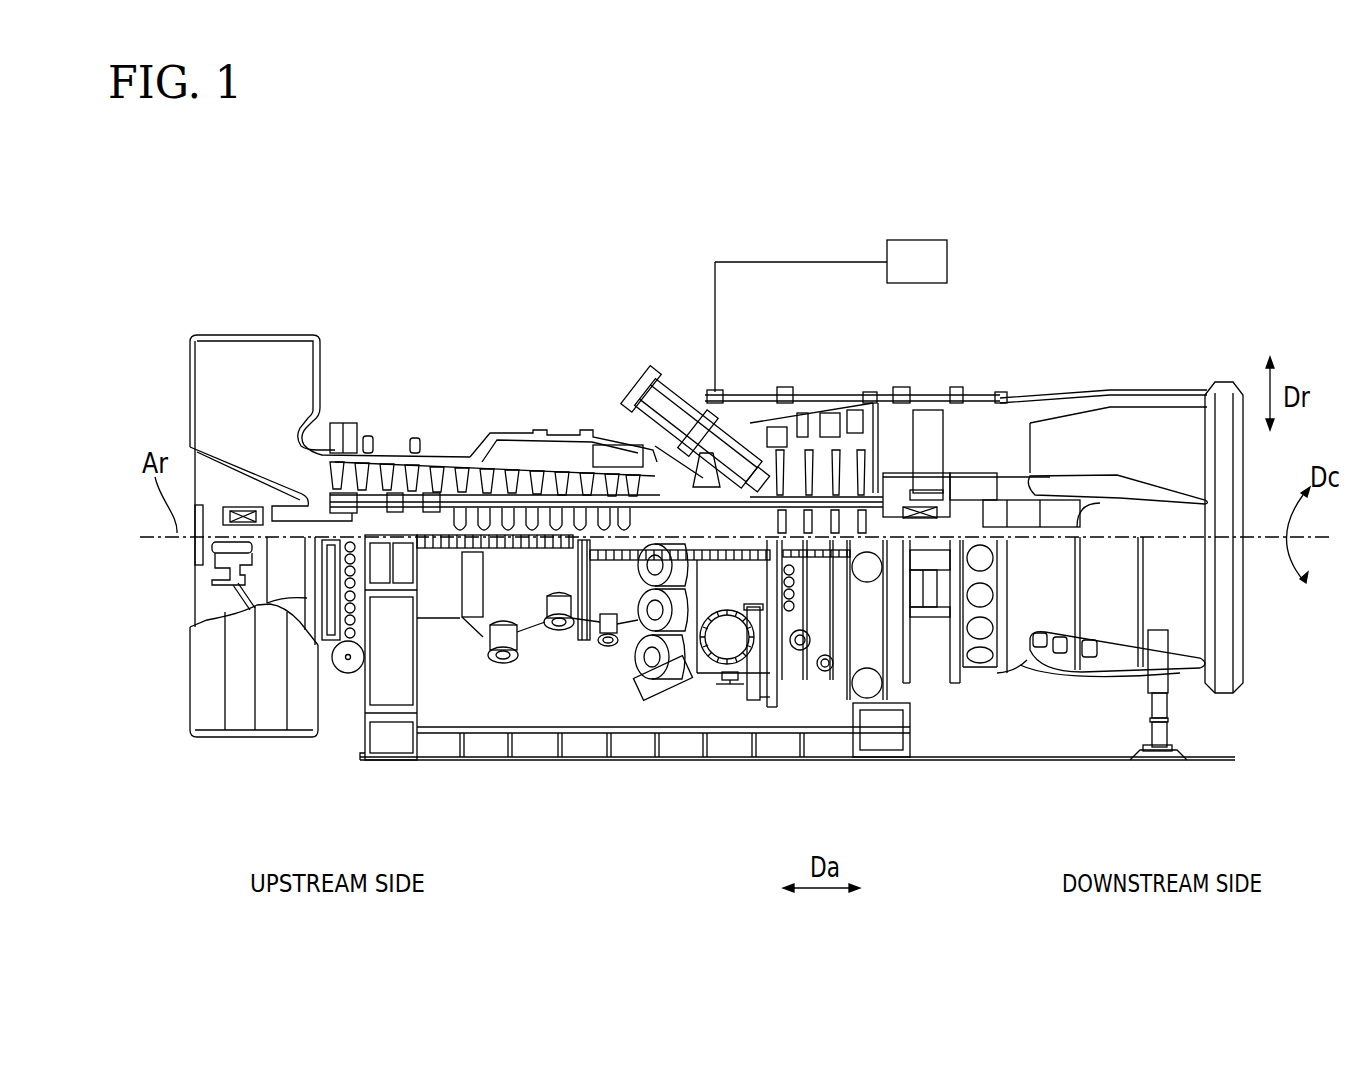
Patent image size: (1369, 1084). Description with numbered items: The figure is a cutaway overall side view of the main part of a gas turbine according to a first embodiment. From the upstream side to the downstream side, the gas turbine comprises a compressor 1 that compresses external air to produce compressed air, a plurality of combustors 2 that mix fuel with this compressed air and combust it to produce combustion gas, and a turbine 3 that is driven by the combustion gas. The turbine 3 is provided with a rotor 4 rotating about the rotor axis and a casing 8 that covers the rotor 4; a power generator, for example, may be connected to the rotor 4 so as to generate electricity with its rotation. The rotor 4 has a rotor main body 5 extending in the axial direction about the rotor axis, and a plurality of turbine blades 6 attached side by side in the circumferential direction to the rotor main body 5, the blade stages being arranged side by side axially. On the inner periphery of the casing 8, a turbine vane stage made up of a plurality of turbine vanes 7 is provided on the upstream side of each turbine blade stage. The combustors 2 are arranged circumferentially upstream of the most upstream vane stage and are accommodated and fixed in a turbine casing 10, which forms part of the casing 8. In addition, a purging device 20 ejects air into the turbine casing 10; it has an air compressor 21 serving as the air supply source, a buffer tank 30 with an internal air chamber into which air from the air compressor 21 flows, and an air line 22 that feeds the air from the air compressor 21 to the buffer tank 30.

The compressor 1 is at (470, 425).
The combustor 2 is at (650, 372).
The turbine 3 is at (932, 698).
The rotor 4 is at (945, 820).
The rotor main body 5 is at (873, 520).
The turbine blade 6 is at (830, 457).
The turbine vane 7 is at (857, 427).
The casing 8 is at (870, 392).
The turbine casing 10 is at (760, 394).
The purging device 20 is at (698, 304).
The air compressor 21 is at (915, 240).
The air line 22 is at (813, 260).
The buffer tank 30 is at (712, 392).